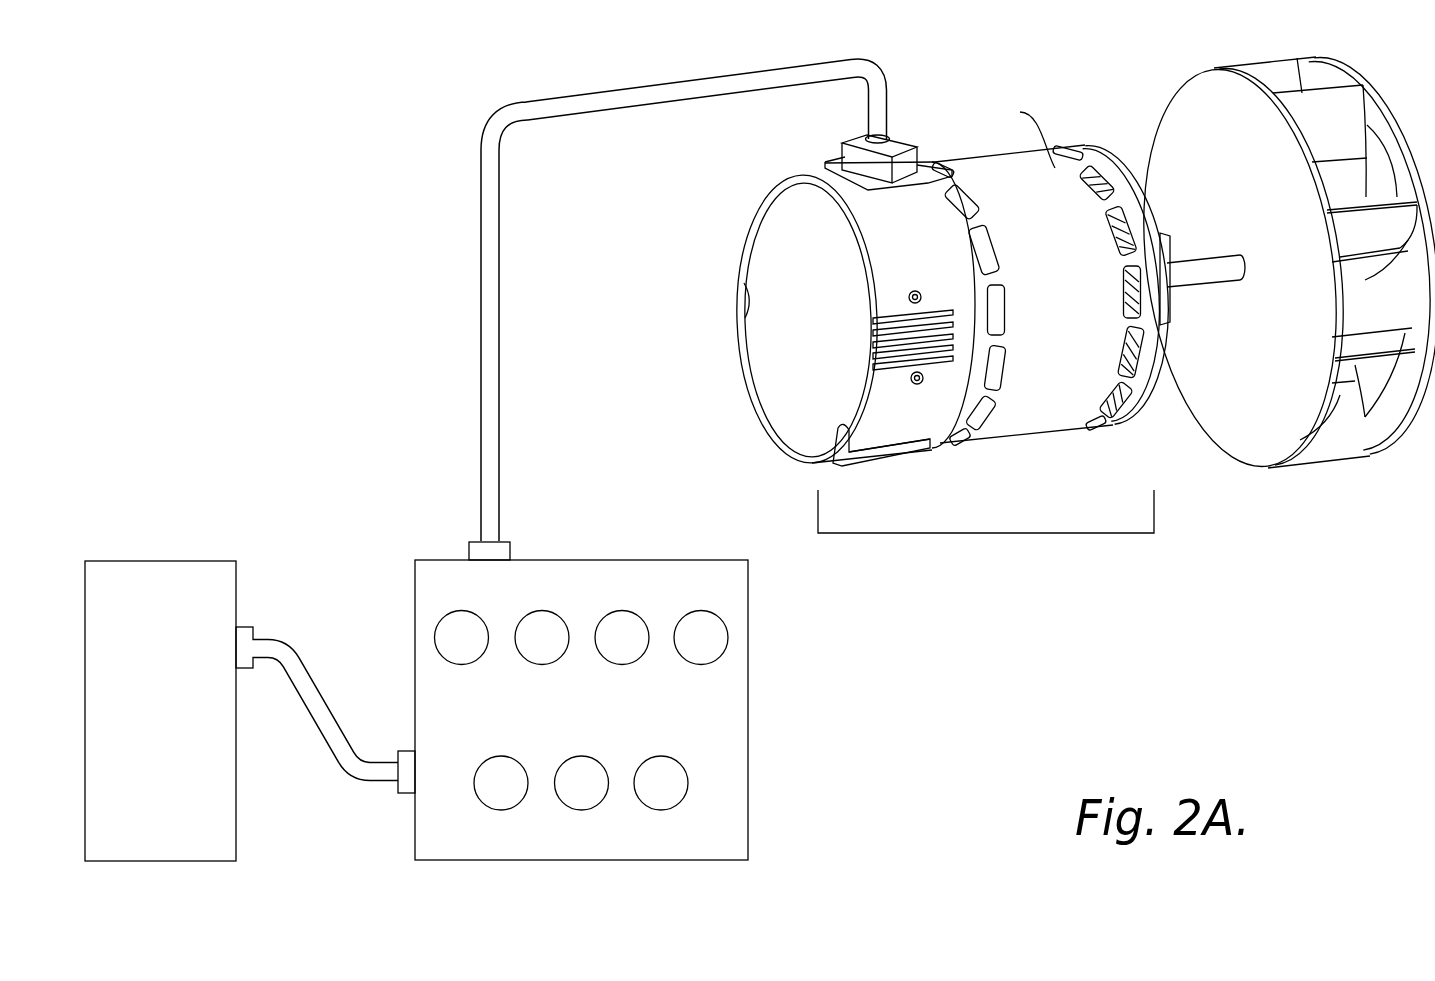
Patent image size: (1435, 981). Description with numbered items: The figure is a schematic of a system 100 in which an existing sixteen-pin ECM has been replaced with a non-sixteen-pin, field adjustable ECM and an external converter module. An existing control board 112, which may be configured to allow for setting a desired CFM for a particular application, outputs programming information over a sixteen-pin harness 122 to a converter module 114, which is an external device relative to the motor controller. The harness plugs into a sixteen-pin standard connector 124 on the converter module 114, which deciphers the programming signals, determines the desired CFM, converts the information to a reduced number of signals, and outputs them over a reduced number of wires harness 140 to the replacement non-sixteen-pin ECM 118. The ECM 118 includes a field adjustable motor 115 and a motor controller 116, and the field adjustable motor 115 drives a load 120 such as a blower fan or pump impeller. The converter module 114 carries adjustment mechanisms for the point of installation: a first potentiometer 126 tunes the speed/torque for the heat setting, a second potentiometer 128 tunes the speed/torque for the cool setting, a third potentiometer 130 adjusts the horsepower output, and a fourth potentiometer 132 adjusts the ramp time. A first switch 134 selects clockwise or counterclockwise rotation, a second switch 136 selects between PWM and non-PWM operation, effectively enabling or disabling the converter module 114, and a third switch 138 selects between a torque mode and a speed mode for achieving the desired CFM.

The system 100 is at (747, 477).
The control board 112 is at (140, 565).
The converter module 114 is at (595, 704).
The field adjustable motor 115 is at (1013, 422).
The motor controller 116 is at (793, 277).
The replacement non-sixteen-pin ECM 118 is at (945, 326).
The load 120 is at (1243, 441).
The sixteen-pin harness 122 is at (329, 731).
The sixteen-pin standard connector 124 is at (402, 784).
The first potentiometer 126 is at (450, 617).
The second potentiometer 128 is at (540, 619).
The third potentiometer 130 is at (629, 619).
The fourth potentiometer 132 is at (720, 644).
The first switch 134 is at (499, 804).
The second switch 136 is at (587, 800).
The third switch 138 is at (681, 785).
The reduced number of wires harness 140 is at (490, 283).